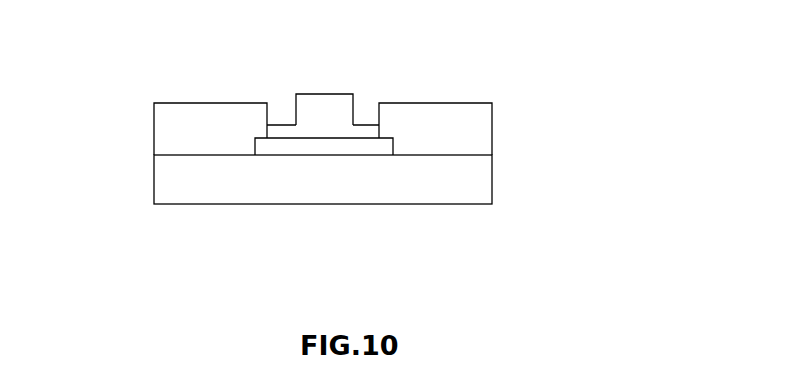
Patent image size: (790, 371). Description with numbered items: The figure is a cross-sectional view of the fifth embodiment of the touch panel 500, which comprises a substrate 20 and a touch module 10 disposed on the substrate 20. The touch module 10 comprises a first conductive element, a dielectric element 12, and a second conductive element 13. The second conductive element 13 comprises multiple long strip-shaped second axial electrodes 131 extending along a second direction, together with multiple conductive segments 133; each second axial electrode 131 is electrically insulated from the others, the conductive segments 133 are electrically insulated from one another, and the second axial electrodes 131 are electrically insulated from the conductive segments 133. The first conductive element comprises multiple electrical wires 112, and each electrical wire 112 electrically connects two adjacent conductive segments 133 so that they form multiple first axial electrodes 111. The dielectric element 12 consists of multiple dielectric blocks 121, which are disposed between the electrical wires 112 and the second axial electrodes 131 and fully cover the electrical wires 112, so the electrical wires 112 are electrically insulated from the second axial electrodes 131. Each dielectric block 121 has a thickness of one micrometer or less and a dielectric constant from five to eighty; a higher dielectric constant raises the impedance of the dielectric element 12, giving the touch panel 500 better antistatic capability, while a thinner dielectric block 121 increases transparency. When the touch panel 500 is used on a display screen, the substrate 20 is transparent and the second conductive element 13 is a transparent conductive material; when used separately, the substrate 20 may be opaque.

The touch panel 500 is at (73, 44).
The touch module 10 is at (422, 85).
The first axial electrodes 111 is at (391, 119).
The electrical wires 112 is at (390, 145).
The conductive segments 133 is at (483, 116).
The dielectric blocks 121 is at (368, 130).
The dielectric element 12 is at (392, 93).
The second axial electrodes 131 is at (319, 99).
The second conductive element 13 is at (285, 90).
The substrate 20 is at (492, 190).